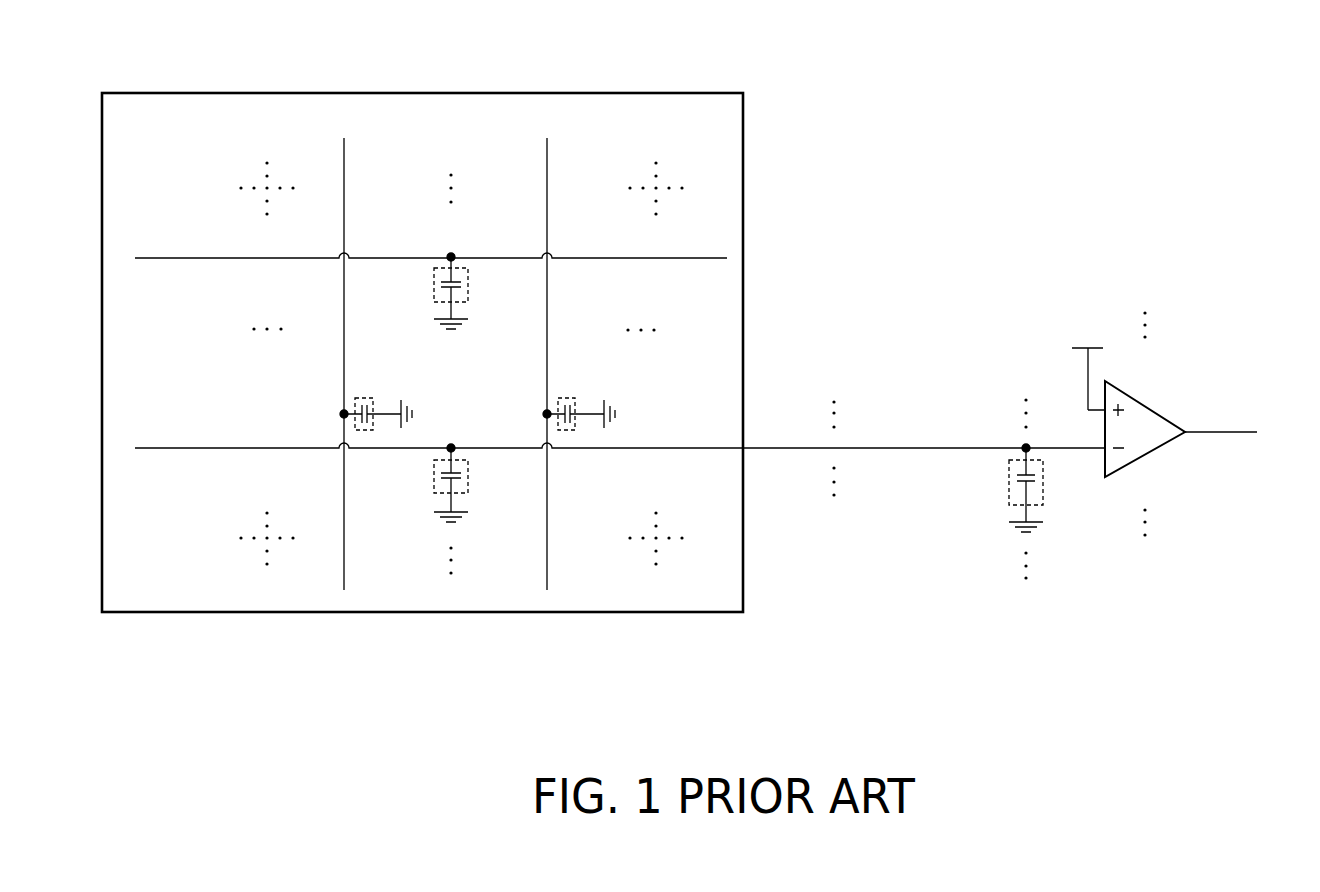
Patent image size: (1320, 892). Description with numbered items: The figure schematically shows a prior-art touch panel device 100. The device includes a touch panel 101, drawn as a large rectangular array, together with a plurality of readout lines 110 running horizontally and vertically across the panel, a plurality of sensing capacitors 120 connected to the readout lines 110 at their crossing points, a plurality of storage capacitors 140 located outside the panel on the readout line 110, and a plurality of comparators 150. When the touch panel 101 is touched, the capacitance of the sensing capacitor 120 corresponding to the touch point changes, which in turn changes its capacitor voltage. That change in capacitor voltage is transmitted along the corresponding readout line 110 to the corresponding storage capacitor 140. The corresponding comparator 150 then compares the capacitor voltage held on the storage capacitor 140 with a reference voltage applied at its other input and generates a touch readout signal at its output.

The touch panel device 100 is at (1195, 128).
The touch panel 101 is at (743, 125).
The readout lines 110 is at (183, 258).
The sensing capacitors 120 is at (467, 284).
The storage capacitors 140 is at (1008, 490).
The comparators 150 is at (1148, 404).